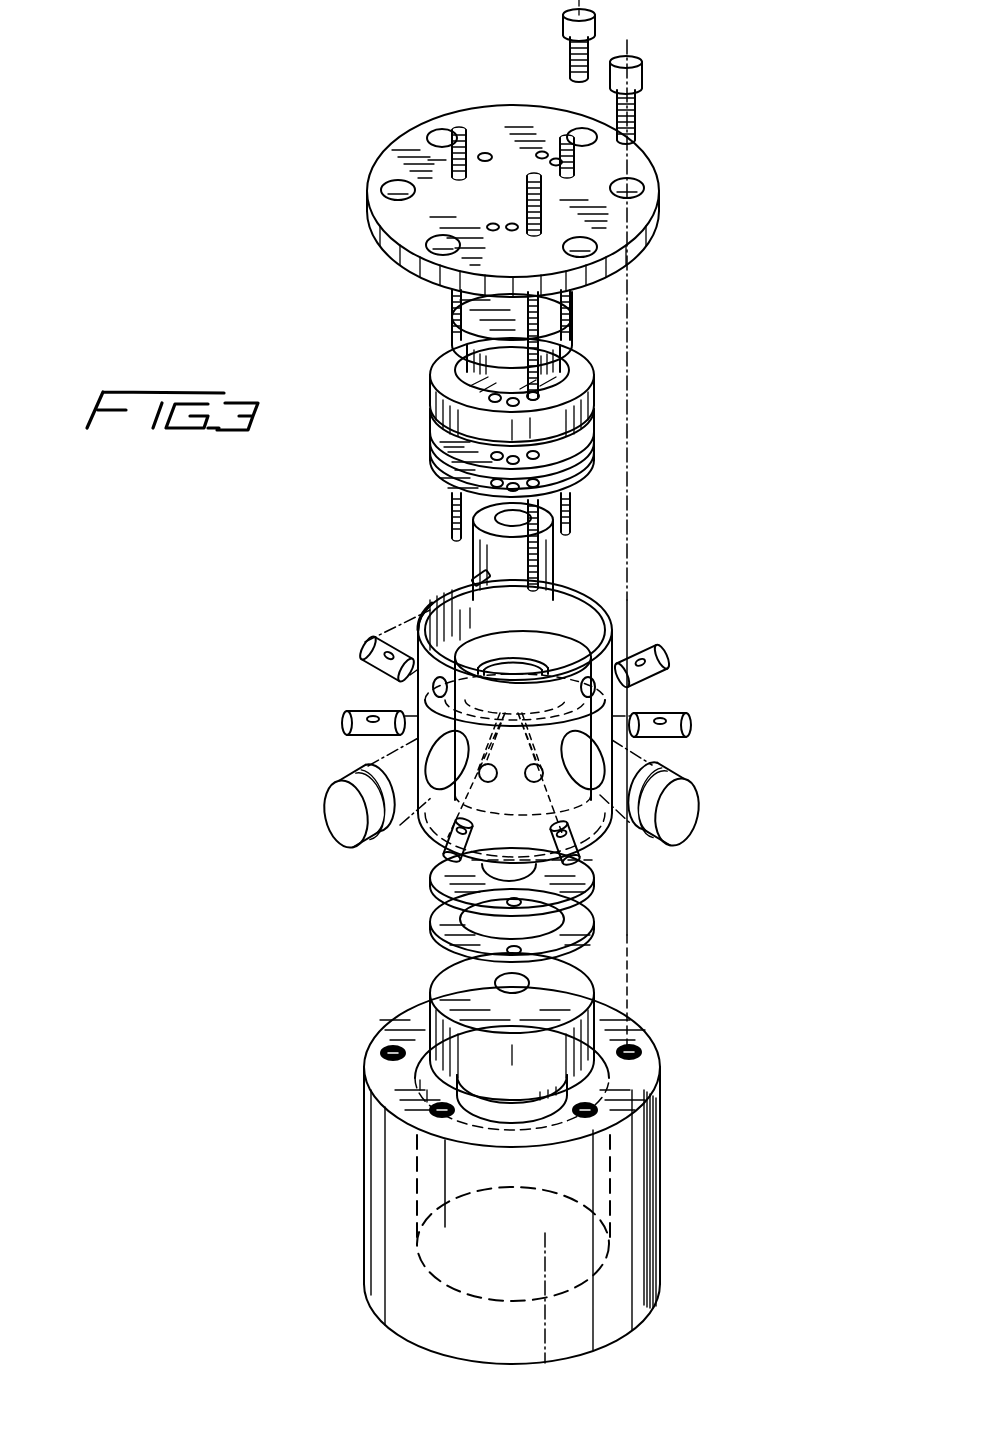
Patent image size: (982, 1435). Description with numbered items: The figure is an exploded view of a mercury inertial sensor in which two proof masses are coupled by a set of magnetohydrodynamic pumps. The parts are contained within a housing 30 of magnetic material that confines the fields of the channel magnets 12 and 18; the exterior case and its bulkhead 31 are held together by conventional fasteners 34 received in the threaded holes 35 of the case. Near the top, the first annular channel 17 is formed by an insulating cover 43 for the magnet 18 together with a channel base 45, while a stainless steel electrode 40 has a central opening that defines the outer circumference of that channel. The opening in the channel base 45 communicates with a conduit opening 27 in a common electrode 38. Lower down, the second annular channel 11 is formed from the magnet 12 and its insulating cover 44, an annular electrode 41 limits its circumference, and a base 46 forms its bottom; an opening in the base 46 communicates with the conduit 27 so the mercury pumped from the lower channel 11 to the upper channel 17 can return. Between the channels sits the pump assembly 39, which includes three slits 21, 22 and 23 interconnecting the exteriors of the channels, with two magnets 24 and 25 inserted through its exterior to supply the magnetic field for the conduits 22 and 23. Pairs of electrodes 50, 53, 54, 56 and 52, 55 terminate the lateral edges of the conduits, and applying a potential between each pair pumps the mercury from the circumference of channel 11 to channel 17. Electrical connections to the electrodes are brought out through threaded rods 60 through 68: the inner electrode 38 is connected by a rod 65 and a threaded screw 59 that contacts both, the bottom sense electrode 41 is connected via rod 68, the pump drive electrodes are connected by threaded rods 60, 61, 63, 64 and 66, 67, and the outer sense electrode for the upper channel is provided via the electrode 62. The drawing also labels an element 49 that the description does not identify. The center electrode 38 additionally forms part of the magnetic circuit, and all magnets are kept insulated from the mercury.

The second annular channel 11 is at (528, 1026).
The magnet 12 is at (600, 1042).
The first annular channel 17 is at (528, 417).
The magnet 18 is at (575, 347).
The slit 21 is at (520, 640).
The slit 22 is at (440, 630).
The slit 23 is at (555, 643).
The magnet 24 is at (698, 812).
The magnet 25 is at (335, 812).
The conduit opening 27 is at (523, 526).
The housing 30 is at (515, 1175).
The bulkhead 31 is at (661, 182).
The fasteners 34 is at (595, 15).
The threaded holes 35 is at (380, 1056).
The common electrode 38 is at (570, 580).
The pump assembly 39 is at (640, 603).
The stainless steel electrode 40 is at (594, 440).
The annular electrode 41 is at (597, 920).
The insulating cover 43 is at (592, 380).
The insulating cover 44 is at (597, 995).
The channel base 45 is at (594, 468).
The base 46 is at (597, 882).
The threaded pins 49 is at (572, 504).
The electrode 50 is at (665, 658).
The electrode 52 is at (690, 720).
The electrode 53 is at (360, 645).
The electrode 54 is at (342, 720).
The electrode 55 is at (580, 860).
The electrode 56 is at (445, 850).
The threaded screw 59 is at (472, 578).
The threaded rod 60 is at (567, 137).
The threaded rod 61 is at (534, 174).
The electrode 62 is at (513, 223).
The threaded rod 63 is at (488, 227).
The threaded rod 64 is at (437, 140).
The rod 65 is at (458, 128).
The threaded rod 66 is at (490, 159).
The threaded rod 67 is at (541, 151).
The rod 68 is at (554, 158).